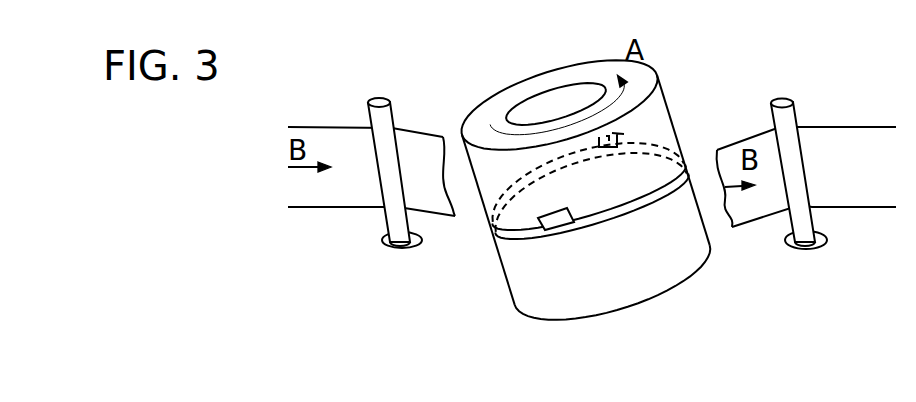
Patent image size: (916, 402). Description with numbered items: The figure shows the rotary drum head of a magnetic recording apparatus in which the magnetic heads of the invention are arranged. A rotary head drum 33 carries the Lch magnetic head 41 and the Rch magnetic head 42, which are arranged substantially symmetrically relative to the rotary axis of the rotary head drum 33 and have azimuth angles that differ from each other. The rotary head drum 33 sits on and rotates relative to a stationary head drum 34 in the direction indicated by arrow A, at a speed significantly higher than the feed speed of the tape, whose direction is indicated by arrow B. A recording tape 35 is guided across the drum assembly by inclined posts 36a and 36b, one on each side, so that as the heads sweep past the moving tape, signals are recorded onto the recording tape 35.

The rotary head drum 33 is at (478, 122).
The stationary head drum 34 is at (527, 283).
The recording tape 35 is at (307, 192).
The inclined post 36a is at (382, 192).
The inclined post 36b is at (790, 180).
The Lch magnetic head 41 is at (572, 232).
The Rch magnetic head 42 is at (617, 133).